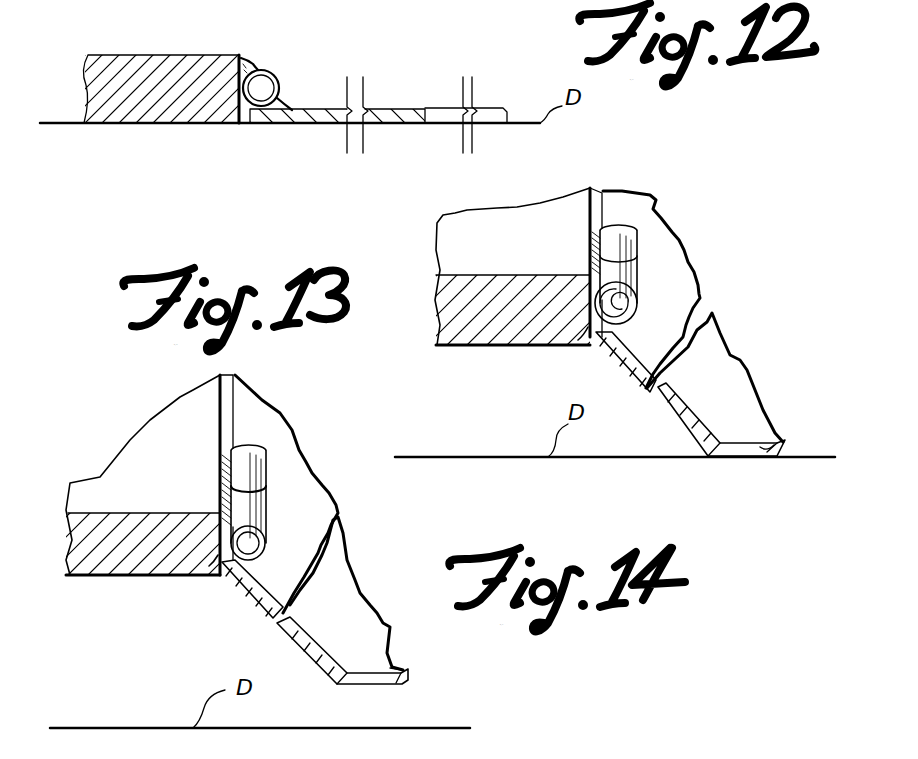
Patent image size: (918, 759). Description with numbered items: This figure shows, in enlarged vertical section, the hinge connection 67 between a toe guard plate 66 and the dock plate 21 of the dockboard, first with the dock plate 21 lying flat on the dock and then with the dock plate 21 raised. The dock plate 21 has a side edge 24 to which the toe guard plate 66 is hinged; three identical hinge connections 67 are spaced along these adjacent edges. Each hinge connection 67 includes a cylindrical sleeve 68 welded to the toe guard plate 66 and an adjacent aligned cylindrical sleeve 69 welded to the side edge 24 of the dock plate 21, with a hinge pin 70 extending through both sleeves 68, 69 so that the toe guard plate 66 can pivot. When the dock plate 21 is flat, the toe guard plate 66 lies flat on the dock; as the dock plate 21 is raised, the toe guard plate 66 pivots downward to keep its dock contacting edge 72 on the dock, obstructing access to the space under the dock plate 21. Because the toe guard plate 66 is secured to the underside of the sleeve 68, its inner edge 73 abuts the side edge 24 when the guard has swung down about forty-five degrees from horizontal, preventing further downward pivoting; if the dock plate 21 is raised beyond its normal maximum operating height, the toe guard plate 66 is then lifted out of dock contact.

In FIG. 12, the dock plate 21 is at (163, 55).
In FIG. 13, the dock plate 21 is at (497, 218).
In FIG. 14, the dock plate 21 is at (153, 438).
In FIG. 12, the side edge 24 is at (243, 55).
In FIG. 13, the side edge 24 is at (592, 191).
In FIG. 14, the side edge 24 is at (217, 533).
In FIG. 12, the toe guard plate 66 is at (322, 108).
In FIG. 13, the toe guard plate 66 is at (668, 318).
In FIG. 14, the toe guard plate 66 is at (337, 590).
In FIG. 12, the hinge connection 67 is at (281, 64).
In FIG. 13, the hinge connection 67 is at (645, 251).
In FIG. 14, the hinge connection 67 is at (272, 476).
In FIG. 12, the cylindrical sleeve 68 is at (278, 86).
In FIG. 13, the cylindrical sleeve 68 is at (637, 278).
In FIG. 14, the cylindrical sleeve 68 is at (263, 512).
In FIG. 13, the cylindrical sleeve 69 is at (622, 232).
In FIG. 14, the cylindrical sleeve 69 is at (263, 463).
In FIG. 12, the hinge pin 70 is at (260, 96).
In FIG. 13, the hinge pin 70 is at (620, 310).
In FIG. 14, the hinge pin 70 is at (263, 542).
In FIG. 12, the dock contacting edge 72 is at (505, 108).
In FIG. 13, the dock contacting edge 72 is at (780, 440).
In FIG. 14, the dock contacting edge 72 is at (372, 677).
In FIG. 12, the inner edge 73 is at (263, 110).
In FIG. 13, the inner edge 73 is at (588, 333).
In FIG. 14, the inner edge 73 is at (213, 560).